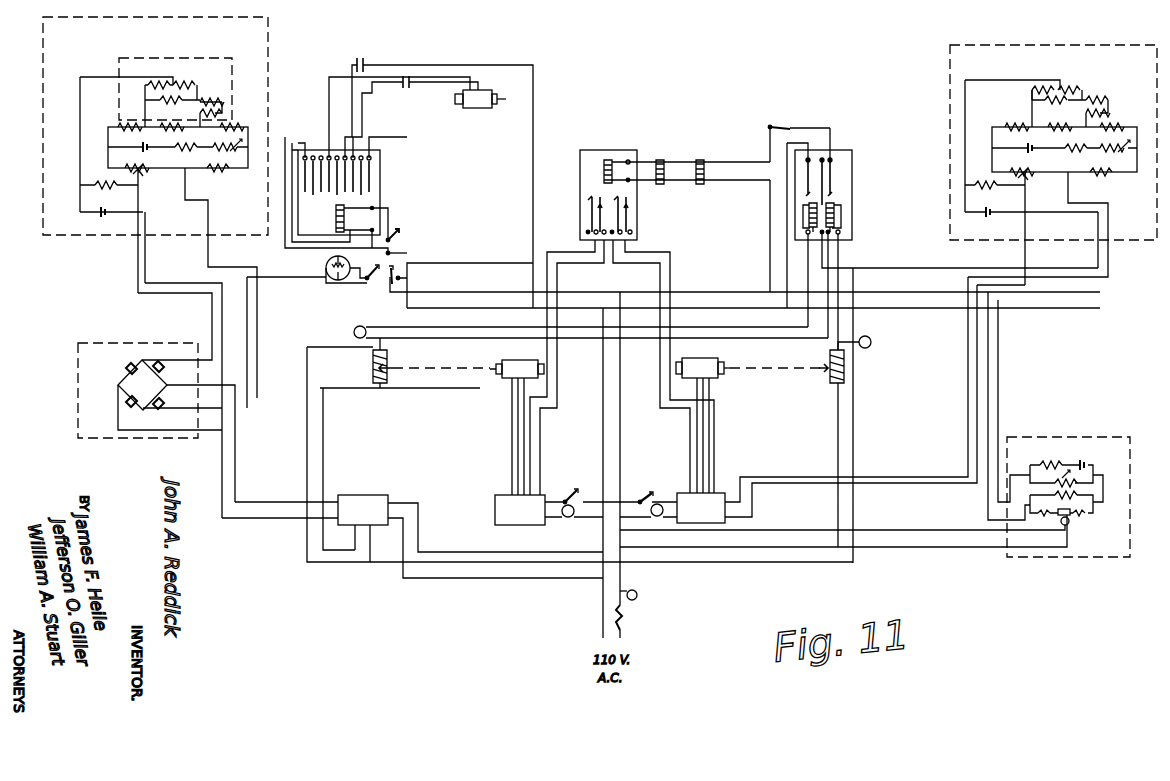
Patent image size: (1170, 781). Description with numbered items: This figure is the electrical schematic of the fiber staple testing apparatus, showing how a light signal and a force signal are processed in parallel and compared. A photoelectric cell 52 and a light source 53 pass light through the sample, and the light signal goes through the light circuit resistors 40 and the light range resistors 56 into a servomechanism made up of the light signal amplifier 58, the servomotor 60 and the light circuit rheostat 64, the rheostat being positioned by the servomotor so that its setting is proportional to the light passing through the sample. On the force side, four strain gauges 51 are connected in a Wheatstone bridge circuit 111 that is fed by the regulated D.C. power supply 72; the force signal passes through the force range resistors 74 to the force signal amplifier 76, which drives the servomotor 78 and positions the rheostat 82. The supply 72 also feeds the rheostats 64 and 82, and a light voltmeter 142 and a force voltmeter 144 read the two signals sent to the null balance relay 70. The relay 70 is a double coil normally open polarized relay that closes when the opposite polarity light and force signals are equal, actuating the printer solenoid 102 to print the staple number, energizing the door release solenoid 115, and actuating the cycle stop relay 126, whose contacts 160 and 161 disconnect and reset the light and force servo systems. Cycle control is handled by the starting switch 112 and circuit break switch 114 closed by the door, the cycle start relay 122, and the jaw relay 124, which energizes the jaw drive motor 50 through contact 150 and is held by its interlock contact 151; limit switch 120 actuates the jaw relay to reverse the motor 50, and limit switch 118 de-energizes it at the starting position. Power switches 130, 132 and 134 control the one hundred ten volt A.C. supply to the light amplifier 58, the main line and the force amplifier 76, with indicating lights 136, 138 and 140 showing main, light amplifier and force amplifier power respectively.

The light circuit resistors 40 is at (1081, 497).
The jaw drive motor 50 is at (478, 108).
The strain gauges 51 is at (144, 381).
The photoelectric cell 52 is at (1072, 514).
The light source 53 is at (1070, 525).
The light range resistors 56 is at (950, 233).
The light signal amplifier 58 is at (725, 493).
The servomotor 60 is at (706, 356).
The light circuit rheostat 64 is at (826, 380).
The null balance relay 70 is at (852, 172).
The regulated D.C. power supply 72 is at (360, 495).
The force range resistors 74 is at (55, 255).
The force signal amplifier 76 is at (495, 522).
The servomotor 78 is at (512, 360).
The rheostat 82 is at (390, 384).
The printer solenoid 102 is at (702, 158).
The Wheatstone bridge circuit 111 is at (130, 400).
The starting switch 112 is at (367, 280).
The circuit break switch 114 is at (778, 122).
The door release solenoid 115 is at (660, 158).
The limit switch 118 is at (402, 280).
The limit switch 120 is at (398, 242).
The cycle start relay 122 is at (326, 270).
The jaw relay 124 is at (409, 183).
The cycle stop relay 126 is at (655, 175).
The power switch 130 is at (640, 490).
The power switch 132 is at (630, 620).
The power switch 134 is at (573, 490).
The indicating light 136 is at (637, 591).
The indicating light 138 is at (660, 504).
The indicating light 140 is at (565, 518).
The light voltmeter 142 is at (871, 343).
The force voltmeter 144 is at (352, 332).
The contact 150 is at (382, 192).
The contact 151 is at (320, 150).
The contact 160 is at (632, 214).
The contact 161 is at (592, 214).